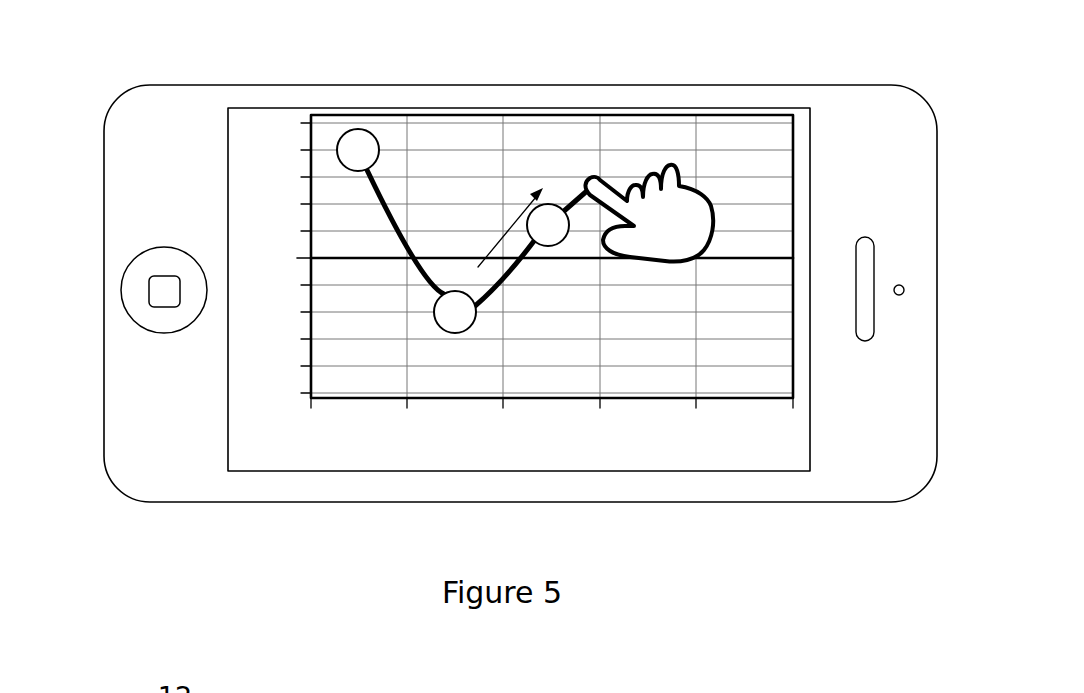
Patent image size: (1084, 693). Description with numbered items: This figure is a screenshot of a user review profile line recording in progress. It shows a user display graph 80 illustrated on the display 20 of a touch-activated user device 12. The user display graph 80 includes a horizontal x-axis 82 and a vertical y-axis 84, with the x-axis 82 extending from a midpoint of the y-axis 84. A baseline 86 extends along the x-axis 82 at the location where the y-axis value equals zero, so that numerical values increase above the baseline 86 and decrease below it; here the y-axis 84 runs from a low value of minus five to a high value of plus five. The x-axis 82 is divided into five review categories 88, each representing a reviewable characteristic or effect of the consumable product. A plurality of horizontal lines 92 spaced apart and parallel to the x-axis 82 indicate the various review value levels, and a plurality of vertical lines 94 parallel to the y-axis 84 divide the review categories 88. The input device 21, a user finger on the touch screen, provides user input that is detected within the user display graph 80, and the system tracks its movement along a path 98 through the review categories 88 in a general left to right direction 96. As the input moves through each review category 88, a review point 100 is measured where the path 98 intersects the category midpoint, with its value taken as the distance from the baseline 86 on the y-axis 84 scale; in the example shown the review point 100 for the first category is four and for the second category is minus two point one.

The user device 12 is at (178, 84).
The user display graph 80 is at (810, 131).
The display 20 is at (255, 452).
The x-axis 82 is at (328, 257).
The y-axis 84 is at (310, 217).
The baseline 86 is at (447, 257).
The review categories 88 is at (360, 423).
The horizontal lines 92 is at (767, 178).
The vertical lines 94 is at (693, 140).
The left to right direction 96 is at (500, 257).
The path 98 is at (395, 238).
The review point 100 is at (376, 134).
The input device 21 is at (593, 183).